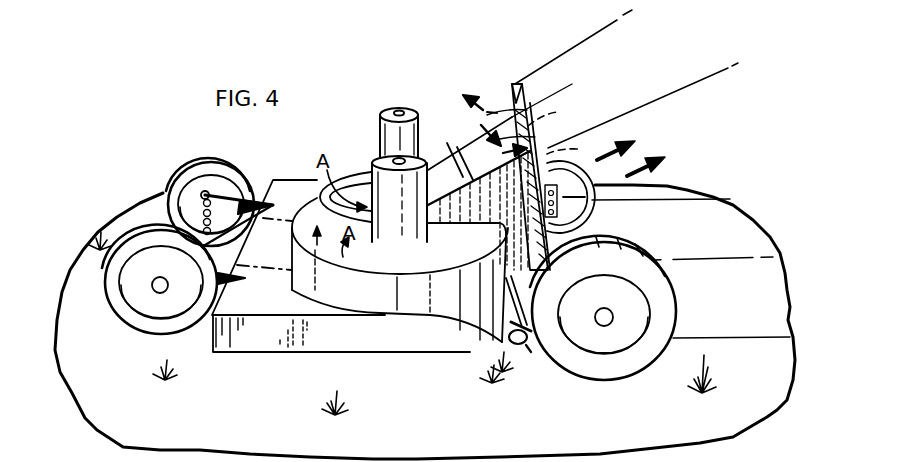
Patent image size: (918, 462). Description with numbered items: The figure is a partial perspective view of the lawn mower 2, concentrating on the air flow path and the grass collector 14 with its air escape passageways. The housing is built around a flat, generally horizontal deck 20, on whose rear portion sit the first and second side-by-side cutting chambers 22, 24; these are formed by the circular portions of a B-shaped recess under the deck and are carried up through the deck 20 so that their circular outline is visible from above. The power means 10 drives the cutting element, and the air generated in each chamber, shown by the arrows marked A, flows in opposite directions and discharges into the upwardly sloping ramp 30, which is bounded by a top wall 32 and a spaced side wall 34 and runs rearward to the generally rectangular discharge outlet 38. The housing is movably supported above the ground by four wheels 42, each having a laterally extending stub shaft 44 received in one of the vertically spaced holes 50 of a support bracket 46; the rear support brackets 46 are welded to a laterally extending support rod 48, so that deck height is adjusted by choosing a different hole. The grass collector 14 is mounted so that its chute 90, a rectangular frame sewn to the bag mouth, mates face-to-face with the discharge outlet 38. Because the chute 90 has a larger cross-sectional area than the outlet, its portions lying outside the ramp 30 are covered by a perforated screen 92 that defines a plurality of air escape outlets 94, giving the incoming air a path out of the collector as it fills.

The lawn mower 2 is at (363, 115).
The power means 10 is at (418, 101).
The grass collector 14 is at (603, 68).
The deck 20 is at (263, 303).
The first cutting chamber 22 is at (347, 166).
The second cutting chamber 24 is at (362, 296).
The ramp 30 is at (443, 230).
The top wall 32 is at (447, 160).
The side wall 34 is at (472, 207).
The discharge outlet 38 is at (528, 112).
The wheels 42 is at (194, 165).
The stub shaft 44 is at (153, 284).
The support brackets 46 is at (258, 200).
The support rod 48 is at (505, 333).
The holes 50 is at (206, 192).
The chute 90 is at (580, 156).
The perforated screen 92 is at (495, 132).
The air escape outlets 94 is at (538, 116).